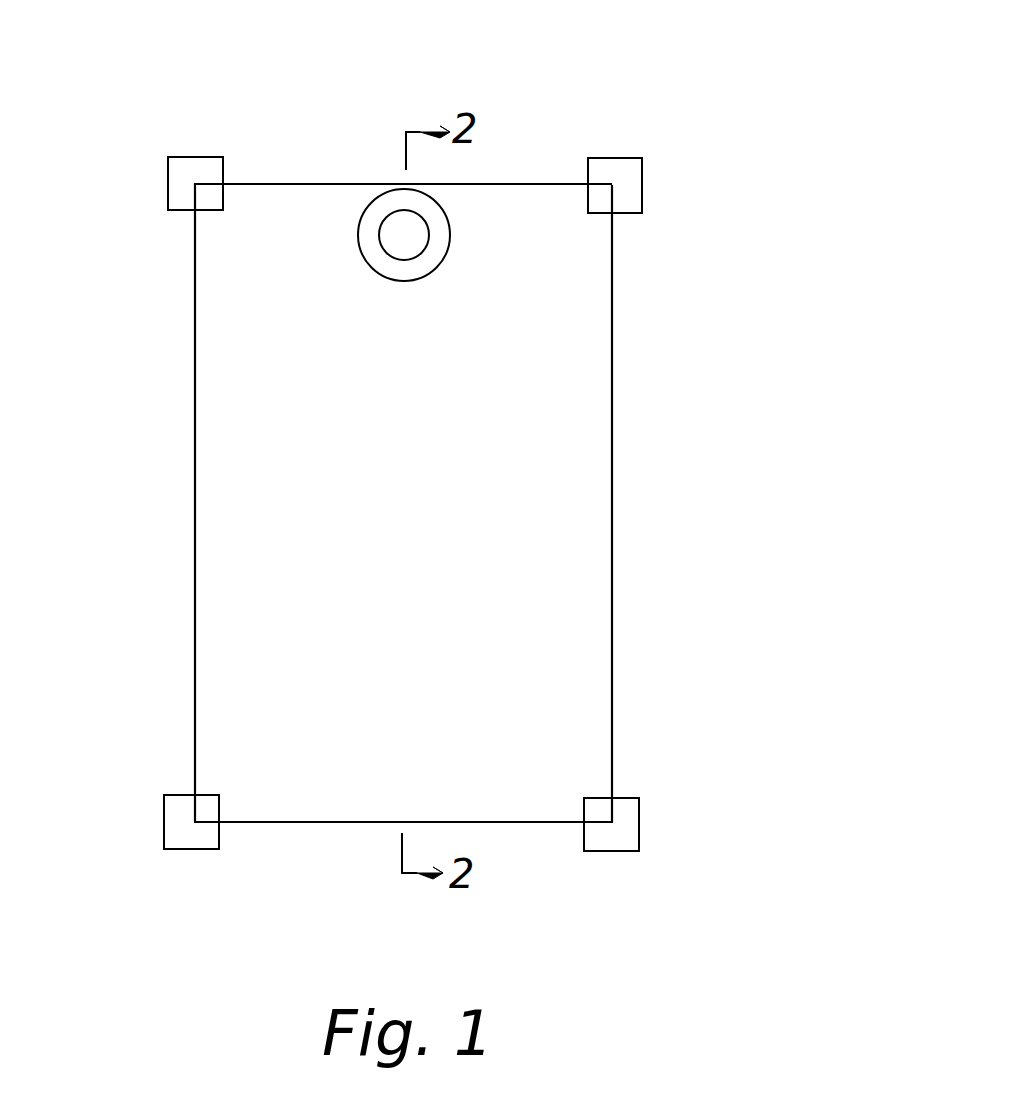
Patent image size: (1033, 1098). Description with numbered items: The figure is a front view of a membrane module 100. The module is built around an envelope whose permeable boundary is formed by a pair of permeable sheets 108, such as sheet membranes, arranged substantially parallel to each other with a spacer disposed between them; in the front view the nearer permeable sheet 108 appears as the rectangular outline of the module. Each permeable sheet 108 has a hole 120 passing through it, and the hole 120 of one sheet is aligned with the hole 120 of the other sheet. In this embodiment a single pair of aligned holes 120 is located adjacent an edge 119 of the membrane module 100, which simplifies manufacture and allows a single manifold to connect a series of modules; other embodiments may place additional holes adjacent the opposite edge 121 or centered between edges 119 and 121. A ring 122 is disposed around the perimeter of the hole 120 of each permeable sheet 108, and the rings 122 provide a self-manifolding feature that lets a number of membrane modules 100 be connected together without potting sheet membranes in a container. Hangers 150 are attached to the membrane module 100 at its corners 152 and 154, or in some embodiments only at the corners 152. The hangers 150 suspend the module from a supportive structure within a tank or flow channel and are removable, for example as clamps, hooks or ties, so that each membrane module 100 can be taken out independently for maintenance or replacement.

The membrane module 100 is at (755, 86).
The permeable sheet 108 is at (600, 387).
The edge 119 is at (333, 182).
The hole 120 is at (410, 228).
The edge 121 is at (328, 824).
The ring 122 is at (388, 278).
The hanger 150 is at (200, 160).
The corner 152 is at (196, 184).
The corner 154 is at (194, 822).